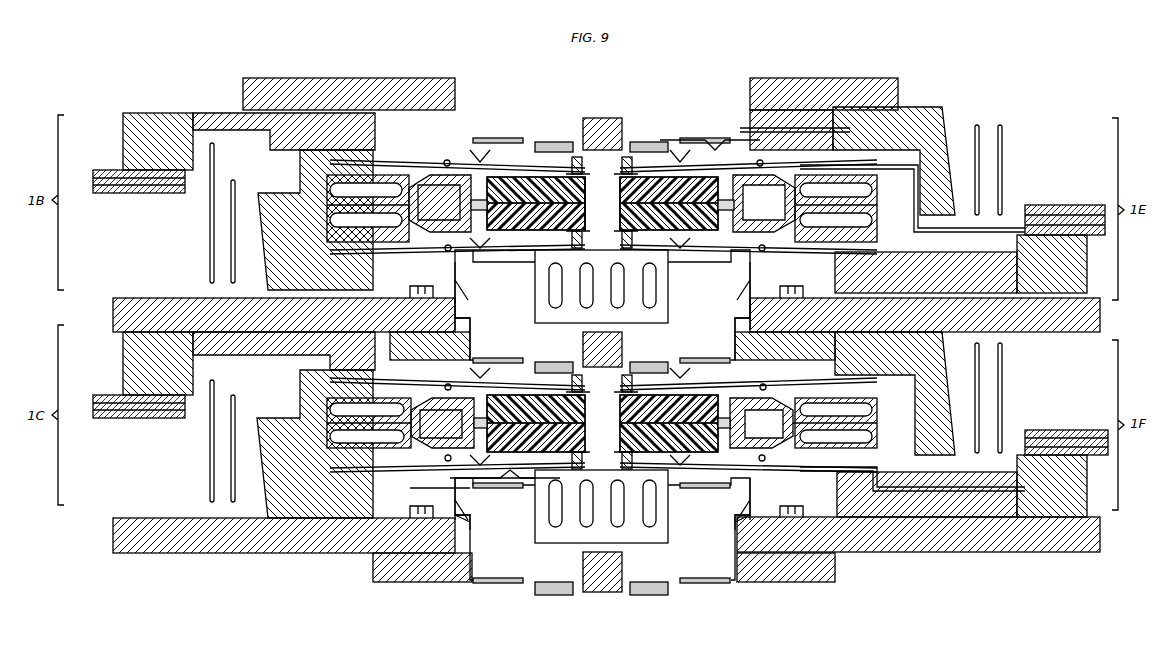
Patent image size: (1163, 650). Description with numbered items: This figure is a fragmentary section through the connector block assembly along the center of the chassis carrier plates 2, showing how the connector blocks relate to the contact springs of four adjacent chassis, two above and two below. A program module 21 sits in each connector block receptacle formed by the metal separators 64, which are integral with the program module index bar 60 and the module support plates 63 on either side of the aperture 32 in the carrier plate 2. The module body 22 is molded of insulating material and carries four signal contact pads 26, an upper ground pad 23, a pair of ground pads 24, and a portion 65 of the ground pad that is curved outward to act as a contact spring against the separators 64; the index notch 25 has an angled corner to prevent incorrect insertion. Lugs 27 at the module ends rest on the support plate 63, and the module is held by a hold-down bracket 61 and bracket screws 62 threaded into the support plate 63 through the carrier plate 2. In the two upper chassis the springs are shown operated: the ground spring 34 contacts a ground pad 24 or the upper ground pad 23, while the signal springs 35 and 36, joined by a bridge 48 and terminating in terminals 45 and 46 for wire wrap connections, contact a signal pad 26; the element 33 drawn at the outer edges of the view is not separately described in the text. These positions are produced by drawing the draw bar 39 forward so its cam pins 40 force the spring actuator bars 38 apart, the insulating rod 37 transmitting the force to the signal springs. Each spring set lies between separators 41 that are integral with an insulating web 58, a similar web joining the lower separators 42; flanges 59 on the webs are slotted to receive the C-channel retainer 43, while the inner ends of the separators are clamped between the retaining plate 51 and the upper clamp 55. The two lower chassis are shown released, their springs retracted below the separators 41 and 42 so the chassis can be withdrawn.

The carrier plate 2 is at (456, 86).
The module 21 is at (535, 296).
The module body 22 is at (455, 270).
The ground pad 23 is at (590, 393).
The ground pads 24 is at (556, 142).
The index notch 25 is at (625, 570).
The signal contact pads 26 is at (712, 138).
The lugs 27 is at (466, 326).
The apertures 32 is at (470, 522).
The circuit board 33 is at (93, 185).
The ground springs 34 is at (655, 150).
The signal spring 35 is at (700, 140).
The signal spring 36 is at (760, 126).
The insulating rod 37 is at (790, 115).
The spring actuator bars 38 is at (745, 232).
The draw bar 39 is at (765, 232).
The cam pins 40 is at (805, 232).
The separators 41 is at (505, 160).
The separators 42 is at (505, 250).
The C-channel retainer 43 is at (620, 215).
The terminal 45 is at (231, 245).
The terminal 46 is at (210, 228).
The bridge 48 is at (862, 150).
The contact spring retaining plate 51 is at (352, 118).
The upper clamp 55 is at (280, 273).
The insulating web 58 is at (518, 195).
The flanges 59 is at (622, 161).
The program module index bar 60 is at (604, 118).
The hold-down bracket 61 is at (462, 296).
The bracket screws 62 is at (410, 290).
The module support plates 63 is at (735, 346).
The metal separators 64 is at (457, 276).
The contact spring portion 65 is at (545, 314).